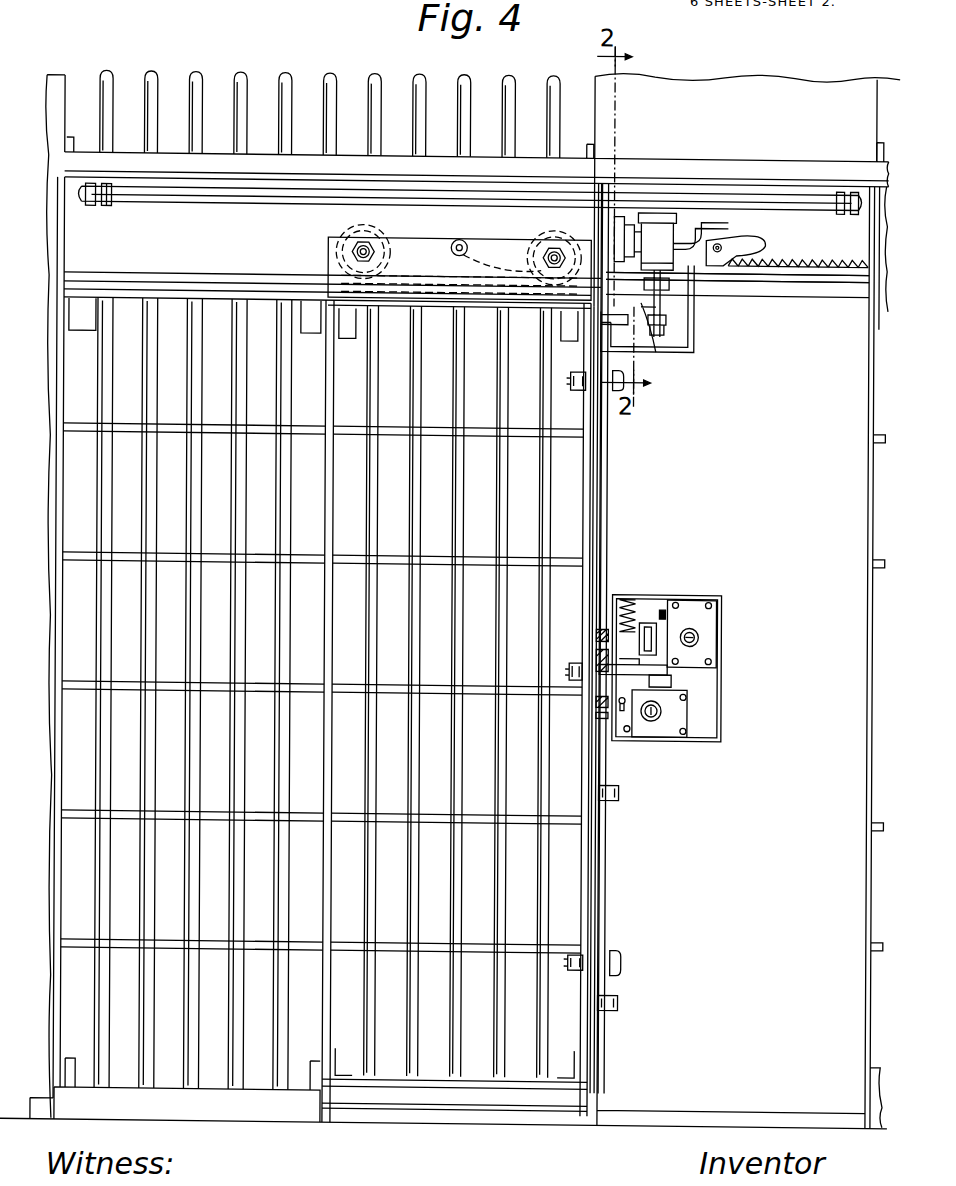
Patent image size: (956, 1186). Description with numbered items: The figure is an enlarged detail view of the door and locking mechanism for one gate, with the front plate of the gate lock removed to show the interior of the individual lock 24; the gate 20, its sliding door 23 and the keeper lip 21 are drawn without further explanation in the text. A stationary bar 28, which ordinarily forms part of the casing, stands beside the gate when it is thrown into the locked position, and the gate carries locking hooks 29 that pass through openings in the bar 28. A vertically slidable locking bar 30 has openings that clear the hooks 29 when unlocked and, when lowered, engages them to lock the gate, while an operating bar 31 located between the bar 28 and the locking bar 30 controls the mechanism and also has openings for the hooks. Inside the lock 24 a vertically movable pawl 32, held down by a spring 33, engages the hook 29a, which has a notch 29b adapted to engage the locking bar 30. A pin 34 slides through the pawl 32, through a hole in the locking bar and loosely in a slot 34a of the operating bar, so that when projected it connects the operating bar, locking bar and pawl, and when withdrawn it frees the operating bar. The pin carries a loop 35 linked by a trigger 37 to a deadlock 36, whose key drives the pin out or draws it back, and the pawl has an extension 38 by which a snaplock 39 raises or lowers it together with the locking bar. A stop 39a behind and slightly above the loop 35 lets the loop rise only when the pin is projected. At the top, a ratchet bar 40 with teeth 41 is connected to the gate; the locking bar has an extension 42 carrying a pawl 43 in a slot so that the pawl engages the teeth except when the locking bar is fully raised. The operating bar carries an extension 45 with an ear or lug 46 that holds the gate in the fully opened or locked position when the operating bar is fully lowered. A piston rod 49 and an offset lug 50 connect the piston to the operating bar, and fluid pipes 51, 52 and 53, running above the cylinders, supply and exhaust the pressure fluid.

The gate 20 is at (617, 550).
The keeper lip 21 is at (572, 624).
The sliding door 23 is at (490, 1043).
The individual lock 24 is at (724, 705).
The stationary bar 28 is at (597, 474).
The locking hooks 29 is at (617, 390).
The hook 29a is at (690, 664).
The notch 29b is at (600, 676).
The locking bar 30 is at (607, 853).
The operating bar 31 is at (598, 829).
The pawl 32 is at (600, 650).
The spring 33 is at (632, 605).
The pin 34 is at (600, 625).
The slot 34a is at (598, 646).
The loop 35 is at (655, 618).
The deadlock 36 is at (700, 612).
The trigger 37 is at (700, 626).
The extension 38 is at (675, 676).
The snaplock 39 is at (672, 721).
The stop 39a is at (664, 603).
The ratchet bar 40 is at (820, 262).
The teeth 41 is at (663, 230).
The extension 42 is at (695, 328).
The pawl 43 is at (745, 240).
The extension 45 is at (600, 308).
The ear or lug 46 is at (600, 240).
The piston rod 49 is at (660, 298).
The offset lug 50 is at (645, 330).
The fluid pipe 51 is at (200, 192).
The fluid pipe 52 is at (108, 193).
The fluid pipe 53 is at (88, 203).